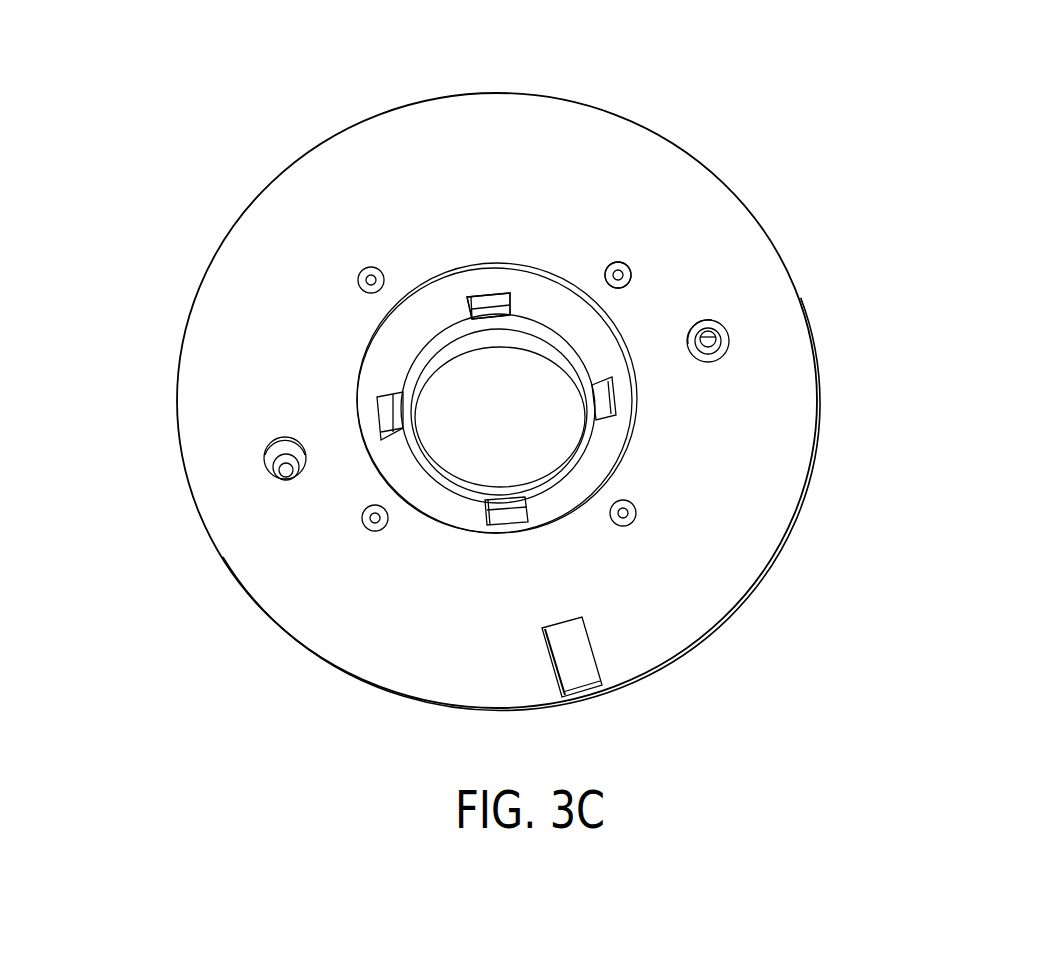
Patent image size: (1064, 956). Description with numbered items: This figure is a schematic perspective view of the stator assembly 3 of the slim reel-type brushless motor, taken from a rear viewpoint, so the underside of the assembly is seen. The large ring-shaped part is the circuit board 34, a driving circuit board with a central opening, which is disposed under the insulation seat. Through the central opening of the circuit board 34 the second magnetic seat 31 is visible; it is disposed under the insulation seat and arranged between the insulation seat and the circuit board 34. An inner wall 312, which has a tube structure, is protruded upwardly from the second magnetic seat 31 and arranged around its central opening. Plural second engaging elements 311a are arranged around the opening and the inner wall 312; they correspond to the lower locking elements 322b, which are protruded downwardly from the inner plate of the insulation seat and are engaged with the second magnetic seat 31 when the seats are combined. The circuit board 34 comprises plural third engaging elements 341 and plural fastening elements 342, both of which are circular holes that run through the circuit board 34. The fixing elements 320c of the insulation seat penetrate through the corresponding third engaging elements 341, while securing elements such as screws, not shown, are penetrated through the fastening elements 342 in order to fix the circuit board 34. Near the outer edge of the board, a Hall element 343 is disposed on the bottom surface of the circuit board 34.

The stator assembly 3 is at (1042, 100).
The second magnetic seat 31 is at (537, 303).
The second engaging elements 311a is at (474, 297).
The inner wall 312 is at (437, 342).
The fixing elements 320c is at (630, 267).
The lower locking elements 322b is at (477, 300).
The circuit board 34 is at (765, 423).
The third engaging elements 341 is at (618, 262).
The fastening elements 342 is at (720, 318).
The Hall element 343 is at (578, 642).